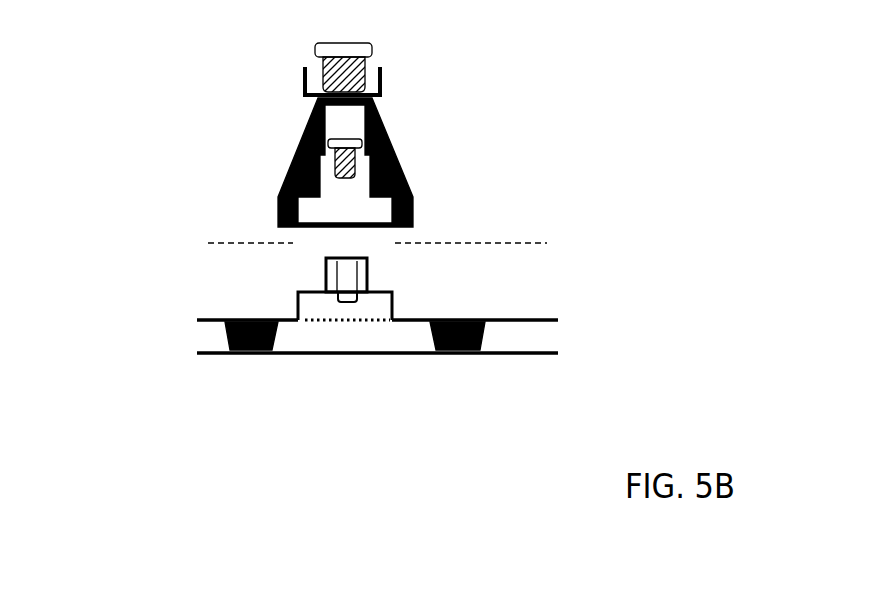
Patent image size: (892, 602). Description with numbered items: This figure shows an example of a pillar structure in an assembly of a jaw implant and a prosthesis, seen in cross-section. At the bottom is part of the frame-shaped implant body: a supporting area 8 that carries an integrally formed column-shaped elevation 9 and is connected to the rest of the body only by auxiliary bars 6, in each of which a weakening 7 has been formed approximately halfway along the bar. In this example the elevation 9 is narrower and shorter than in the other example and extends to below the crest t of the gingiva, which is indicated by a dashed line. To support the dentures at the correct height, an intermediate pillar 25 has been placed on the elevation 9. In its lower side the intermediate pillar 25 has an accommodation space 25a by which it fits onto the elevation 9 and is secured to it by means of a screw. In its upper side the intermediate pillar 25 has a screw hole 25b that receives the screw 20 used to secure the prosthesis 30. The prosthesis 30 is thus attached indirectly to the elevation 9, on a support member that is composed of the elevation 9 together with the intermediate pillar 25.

The screw 20 is at (350, 45).
The prosthesis 30 is at (383, 85).
The intermediate pillar 25 is at (295, 160).
The screw hole 25b is at (347, 120).
The accommodation space 25a is at (328, 213).
The crest of the gingiva t is at (497, 238).
The column-shaped elevation 9 is at (359, 266).
The supporting area 8 is at (355, 342).
The auxiliary bars 6 is at (200, 337).
The weakenings 7 is at (245, 353).